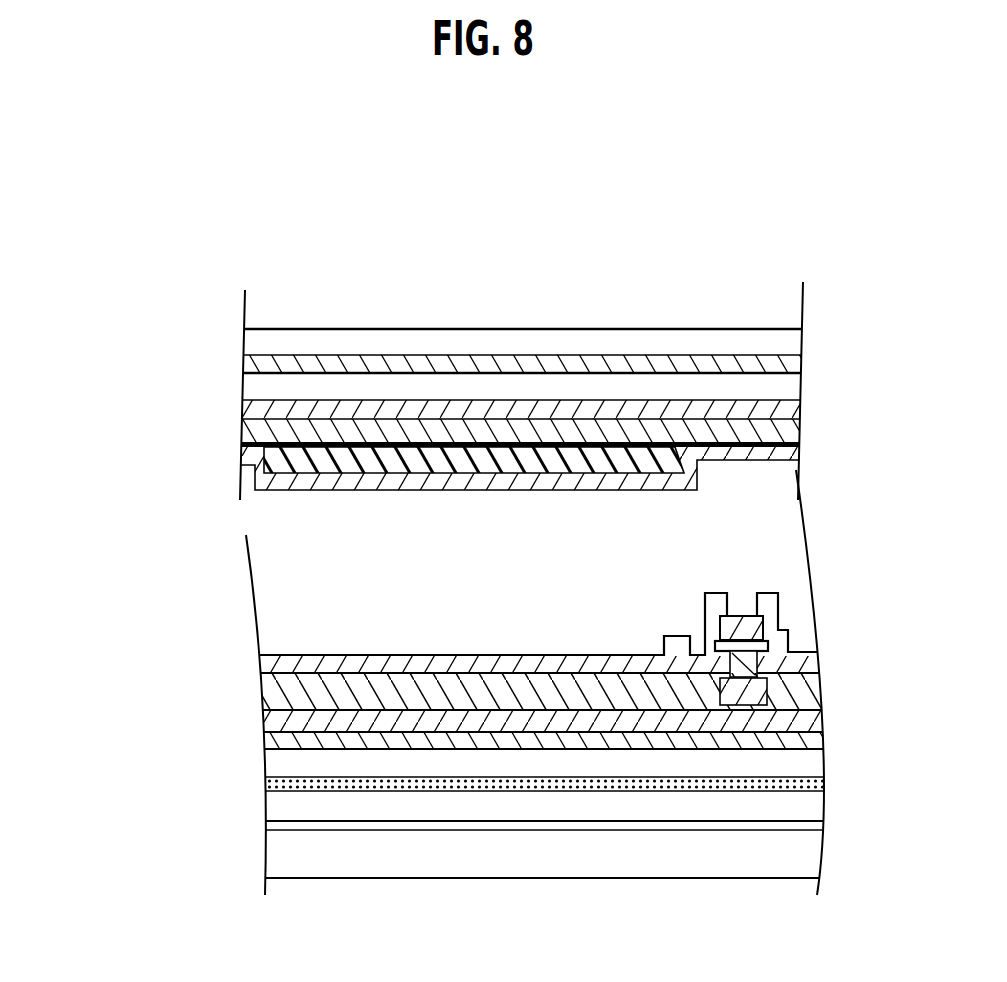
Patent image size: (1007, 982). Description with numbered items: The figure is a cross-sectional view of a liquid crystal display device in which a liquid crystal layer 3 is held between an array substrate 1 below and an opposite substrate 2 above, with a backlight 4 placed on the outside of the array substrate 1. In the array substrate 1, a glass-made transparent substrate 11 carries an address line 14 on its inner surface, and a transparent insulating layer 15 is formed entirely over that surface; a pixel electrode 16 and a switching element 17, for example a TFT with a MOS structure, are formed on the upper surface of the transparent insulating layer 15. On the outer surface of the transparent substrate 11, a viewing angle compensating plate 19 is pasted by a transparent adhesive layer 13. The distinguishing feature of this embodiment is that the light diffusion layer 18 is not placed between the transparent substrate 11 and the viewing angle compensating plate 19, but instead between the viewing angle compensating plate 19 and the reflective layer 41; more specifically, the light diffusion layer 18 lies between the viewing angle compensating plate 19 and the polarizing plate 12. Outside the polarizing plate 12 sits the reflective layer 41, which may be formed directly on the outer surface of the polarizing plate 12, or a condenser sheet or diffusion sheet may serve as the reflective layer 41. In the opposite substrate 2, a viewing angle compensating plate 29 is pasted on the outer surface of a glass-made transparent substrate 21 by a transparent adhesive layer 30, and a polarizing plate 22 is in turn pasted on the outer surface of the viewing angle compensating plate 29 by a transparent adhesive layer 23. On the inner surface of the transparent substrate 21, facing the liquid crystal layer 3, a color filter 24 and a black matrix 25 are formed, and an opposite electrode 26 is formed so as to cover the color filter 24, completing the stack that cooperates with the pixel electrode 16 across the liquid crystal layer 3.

The array substrate 1 is at (130, 657).
The opposite substrate 2 is at (130, 329).
The liquid crystal layer 3 is at (130, 462).
The backlight 4 is at (286, 855).
The transparent substrate 11 is at (263, 725).
The polarizing plate 12 is at (283, 808).
The transparent adhesive layer 13 is at (822, 740).
The address line 14 is at (822, 685).
The transparent insulating layer 15 is at (263, 693).
The pixel electrode 16 is at (298, 657).
The switching element 17 is at (766, 628).
The light diffusion layer 18 is at (823, 789).
The viewing angle compensating plate 19 is at (812, 760).
The transparent substrate 21 is at (388, 428).
The polarizing plate 22 is at (245, 343).
The transparent adhesive layer 23 is at (803, 358).
The color filter 24 is at (596, 457).
The black matrix 25 is at (768, 440).
The opposite electrode 26 is at (483, 478).
The viewing angle compensating plate 29 is at (244, 393).
The transparent adhesive layer 30 is at (802, 412).
The reflective layer 41 is at (822, 827).